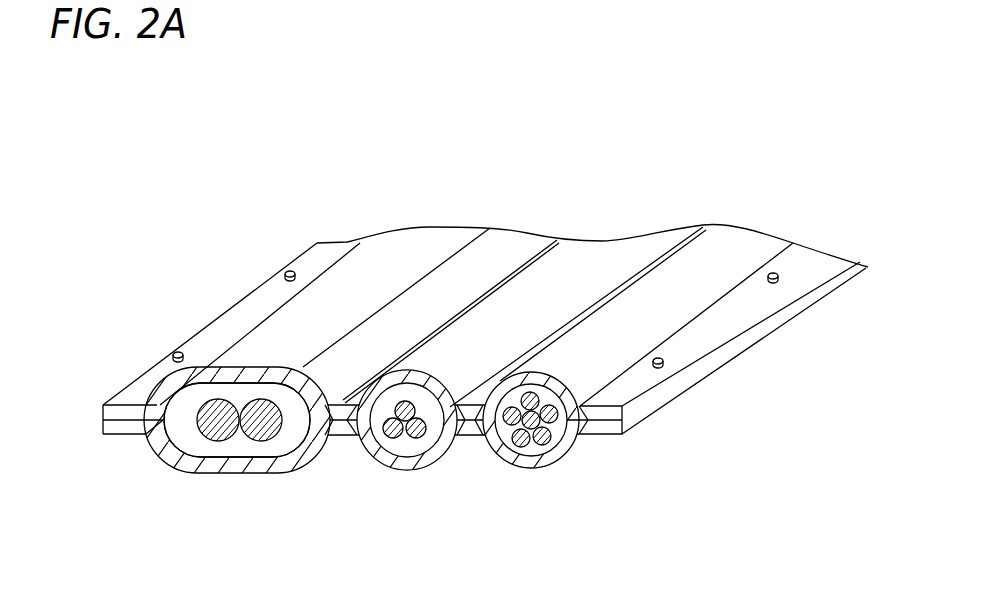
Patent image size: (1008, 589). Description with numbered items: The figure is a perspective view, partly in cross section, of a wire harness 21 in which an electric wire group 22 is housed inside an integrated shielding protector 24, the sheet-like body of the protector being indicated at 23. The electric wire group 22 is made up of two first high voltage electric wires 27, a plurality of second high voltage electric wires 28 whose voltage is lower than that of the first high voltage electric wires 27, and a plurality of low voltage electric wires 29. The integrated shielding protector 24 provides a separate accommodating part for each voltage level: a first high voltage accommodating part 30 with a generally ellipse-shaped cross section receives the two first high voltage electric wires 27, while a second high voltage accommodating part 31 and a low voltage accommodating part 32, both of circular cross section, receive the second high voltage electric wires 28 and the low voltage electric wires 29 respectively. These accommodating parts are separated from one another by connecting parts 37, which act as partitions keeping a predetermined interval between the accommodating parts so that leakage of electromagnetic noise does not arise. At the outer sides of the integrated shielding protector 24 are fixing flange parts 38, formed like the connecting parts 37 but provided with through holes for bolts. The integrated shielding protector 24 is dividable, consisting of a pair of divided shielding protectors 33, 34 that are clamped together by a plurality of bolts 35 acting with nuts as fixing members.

The wire harness 21 is at (652, 183).
The electric wire group 22 is at (210, 80).
The sheet portion 23 is at (577, 239).
The integrated shielding protector 24 is at (518, 297).
The first high voltage electric wire 27 is at (200, 432).
The second high voltage electric wire 28 is at (393, 436).
The low voltage electric wire 29 is at (520, 447).
The first high voltage accommodating part 30 is at (165, 455).
The second high voltage accommodating part 31 is at (383, 440).
The low voltage accommodating part 32 is at (507, 440).
The divided shielding protector 33 is at (257, 330).
The divided shielding protector 34 is at (267, 475).
The bolt 35 is at (291, 272).
The connecting part 37 is at (351, 400).
The fixing flange part 38 is at (124, 397).